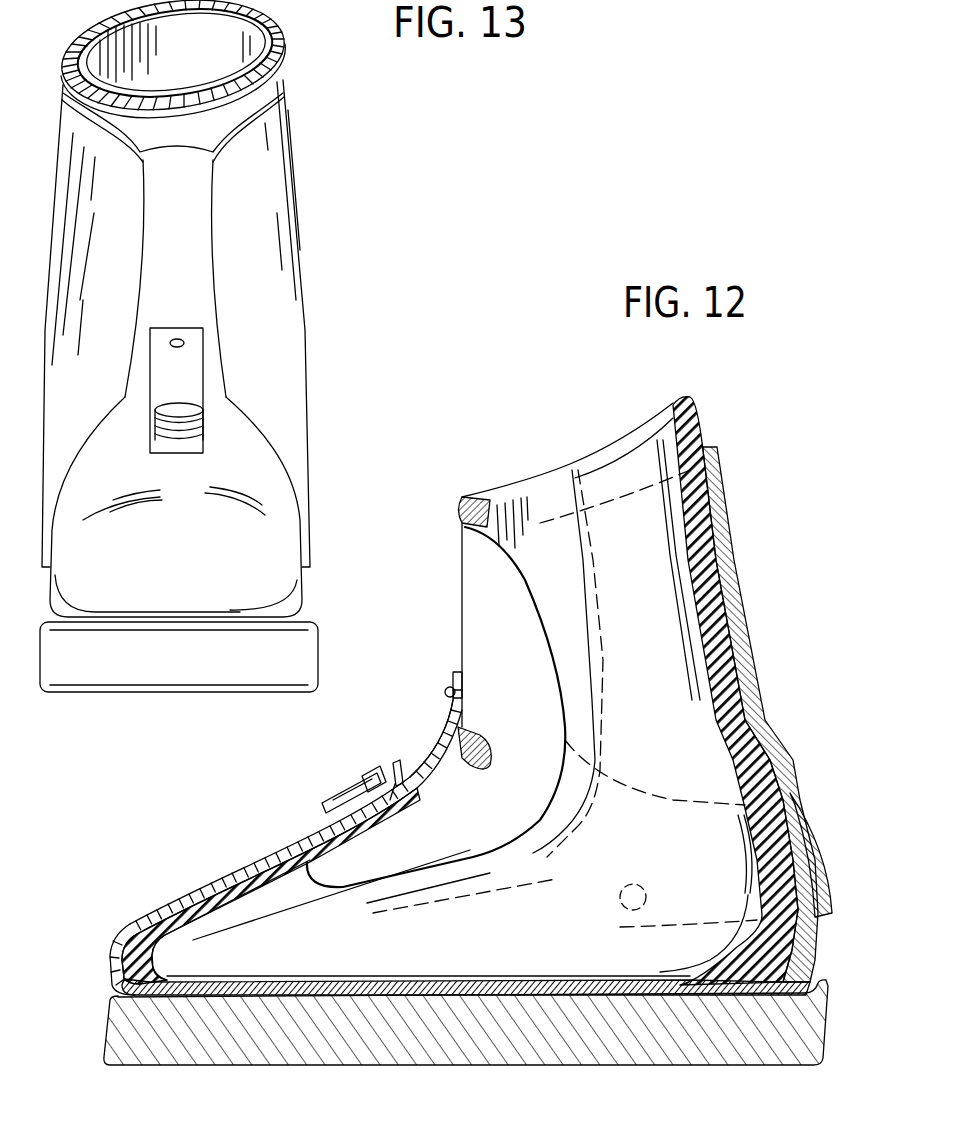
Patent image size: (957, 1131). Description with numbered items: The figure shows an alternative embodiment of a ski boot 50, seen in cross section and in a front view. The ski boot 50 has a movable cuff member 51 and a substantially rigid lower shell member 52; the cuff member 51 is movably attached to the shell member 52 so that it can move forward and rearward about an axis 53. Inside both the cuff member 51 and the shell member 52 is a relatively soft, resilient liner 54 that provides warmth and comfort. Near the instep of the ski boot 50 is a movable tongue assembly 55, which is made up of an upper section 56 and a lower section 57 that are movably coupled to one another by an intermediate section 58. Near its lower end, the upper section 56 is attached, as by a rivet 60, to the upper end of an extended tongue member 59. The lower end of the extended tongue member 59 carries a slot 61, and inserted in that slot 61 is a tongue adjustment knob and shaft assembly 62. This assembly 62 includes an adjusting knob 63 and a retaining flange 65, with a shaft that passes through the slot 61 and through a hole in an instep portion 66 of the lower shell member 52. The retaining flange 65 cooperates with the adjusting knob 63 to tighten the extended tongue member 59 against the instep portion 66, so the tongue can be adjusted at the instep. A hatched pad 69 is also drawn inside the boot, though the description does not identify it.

In FIG. 13, the ski boot 50 is at (306, 108).
In FIG. 12, the ski boot 50 is at (745, 590).
In FIG. 13, the cuff member 51 is at (302, 243).
In FIG. 12, the cuff member 51 is at (721, 484).
In FIG. 13, the lower shell member 52 is at (262, 525).
In FIG. 12, the lower shell member 52 is at (146, 910).
In FIG. 12, the axis 53 is at (625, 905).
In FIG. 12, the liner 54 is at (693, 610).
In FIG. 12, the tongue assembly 55 is at (455, 547).
In FIG. 12, the upper section 56 is at (520, 637).
In FIG. 12, the lower section 57 is at (430, 853).
In FIG. 12, the intermediate section 58 is at (560, 826).
In FIG. 13, the extended tongue member 59 is at (185, 362).
In FIG. 12, the extended tongue member 59 is at (433, 747).
In FIG. 13, the rivet 60 is at (178, 340).
In FIG. 12, the rivet 60 is at (446, 692).
In FIG. 12, the slot 61 is at (397, 783).
In FIG. 12, the tongue adjustment knob and shaft assembly 62 is at (318, 800).
In FIG. 13, the adjusting knob 63 is at (183, 420).
In FIG. 12, the adjusting knob 63 is at (372, 767).
In FIG. 12, the retaining flange 65 is at (360, 830).
In FIG. 12, the instep portion 66 is at (323, 830).
In FIG. 12, the ankle pad 69 is at (380, 827).